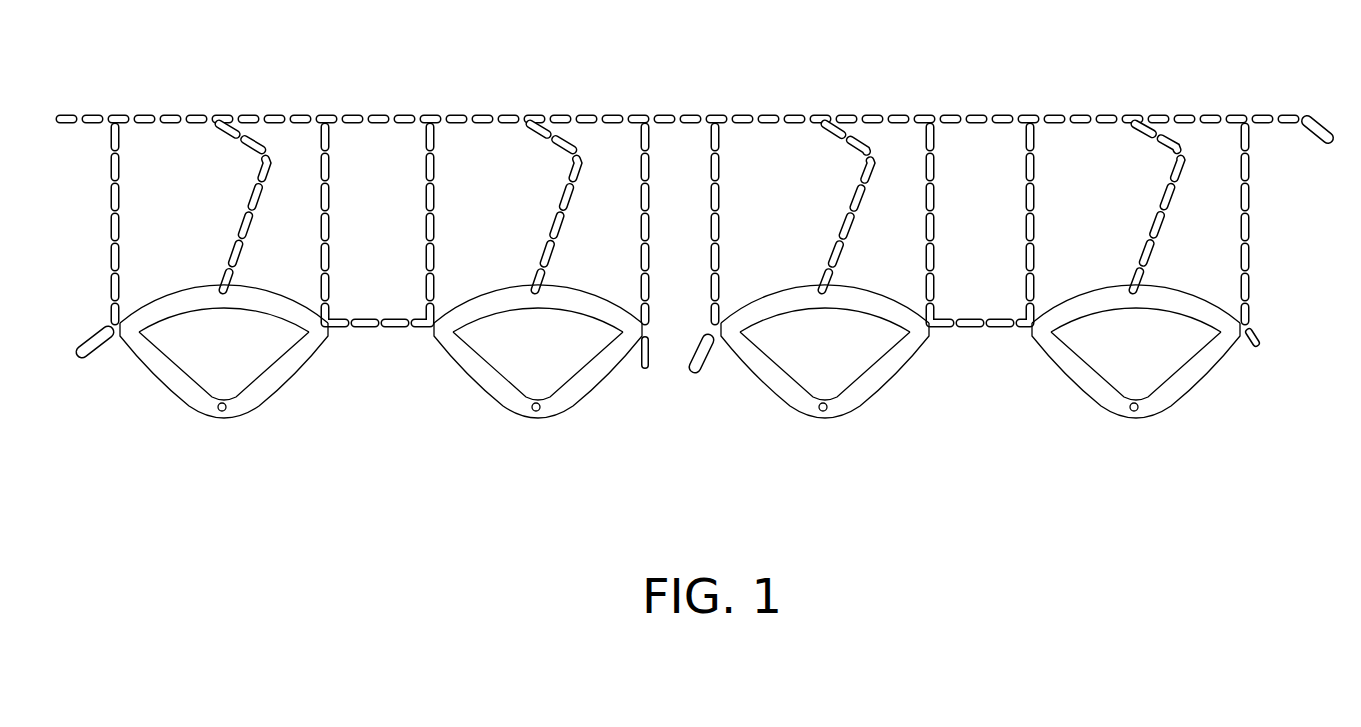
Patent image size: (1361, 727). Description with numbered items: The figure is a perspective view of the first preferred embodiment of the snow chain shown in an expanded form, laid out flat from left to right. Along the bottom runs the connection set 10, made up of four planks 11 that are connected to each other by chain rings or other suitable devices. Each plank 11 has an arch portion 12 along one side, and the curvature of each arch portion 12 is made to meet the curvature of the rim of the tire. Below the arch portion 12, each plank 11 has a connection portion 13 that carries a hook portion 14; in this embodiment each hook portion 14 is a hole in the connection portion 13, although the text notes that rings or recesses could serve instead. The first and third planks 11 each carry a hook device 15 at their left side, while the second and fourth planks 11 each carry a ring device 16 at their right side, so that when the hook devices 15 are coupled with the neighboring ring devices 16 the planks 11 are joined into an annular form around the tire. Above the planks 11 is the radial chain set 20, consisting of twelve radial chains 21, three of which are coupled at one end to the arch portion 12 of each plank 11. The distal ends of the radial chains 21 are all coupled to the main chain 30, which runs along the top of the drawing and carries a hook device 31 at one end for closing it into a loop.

The connection set 10 is at (640, 362).
The plank 11 is at (640, 332).
The arch portion 12 is at (163, 298).
The connection portion 13 is at (160, 377).
The hook portion 14 is at (222, 412).
The hook device 15 is at (80, 347).
The ring device 16 is at (653, 357).
The radial chain set 20 is at (683, 161).
The radial chain 21 is at (425, 176).
The main chain 30 is at (183, 113).
The hook device 31 is at (1316, 110).